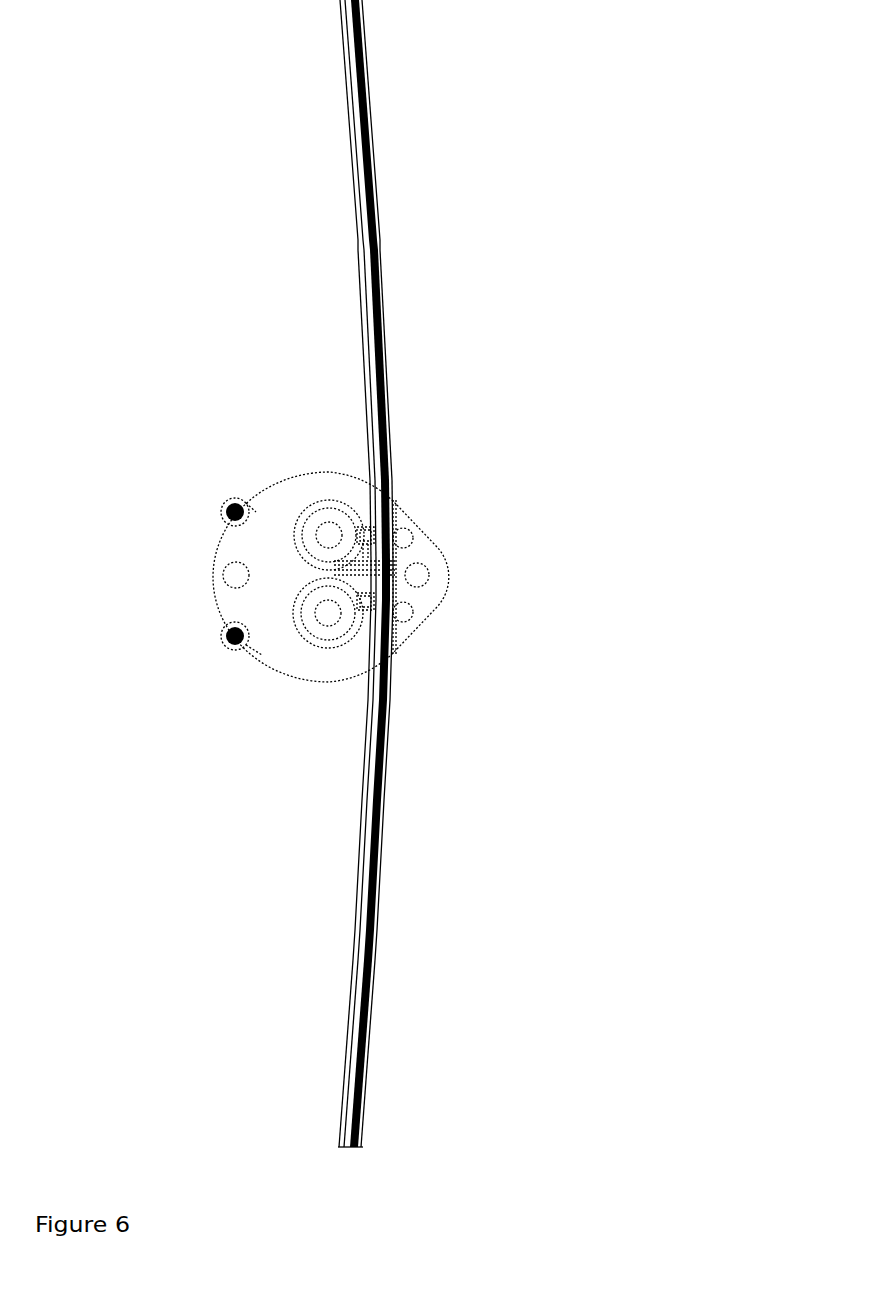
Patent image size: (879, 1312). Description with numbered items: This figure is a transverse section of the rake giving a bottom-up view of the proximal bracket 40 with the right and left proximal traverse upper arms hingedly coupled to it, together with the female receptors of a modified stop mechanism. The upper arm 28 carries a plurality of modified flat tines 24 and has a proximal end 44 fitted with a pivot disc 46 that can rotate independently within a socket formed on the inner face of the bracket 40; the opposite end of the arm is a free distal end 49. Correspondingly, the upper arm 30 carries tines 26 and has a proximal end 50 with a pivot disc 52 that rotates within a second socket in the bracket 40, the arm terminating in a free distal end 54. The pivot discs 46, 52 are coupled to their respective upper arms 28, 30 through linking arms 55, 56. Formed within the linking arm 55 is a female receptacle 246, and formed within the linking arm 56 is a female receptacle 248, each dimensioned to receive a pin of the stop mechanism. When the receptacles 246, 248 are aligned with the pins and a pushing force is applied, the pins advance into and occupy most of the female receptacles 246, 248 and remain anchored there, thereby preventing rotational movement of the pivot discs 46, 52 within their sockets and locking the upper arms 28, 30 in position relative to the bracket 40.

The free distal end 49 is at (357, 30).
The upper arm 28 is at (365, 212).
The tines 24 is at (367, 288).
The proximal end 44 is at (387, 498).
The proximal end 50 is at (387, 647).
The upper arm 30 is at (362, 902).
The tines 26 is at (355, 1025).
The free distal end 54 is at (362, 1135).
The proximal bracket 40 is at (340, 470).
The pivot disc 46 is at (308, 515).
The pivot disc 52 is at (317, 633).
The linking arm 55 is at (390, 558).
The linking arm 56 is at (380, 590).
The female receptacle 246 is at (390, 550).
The female receptacle 248 is at (400, 608).